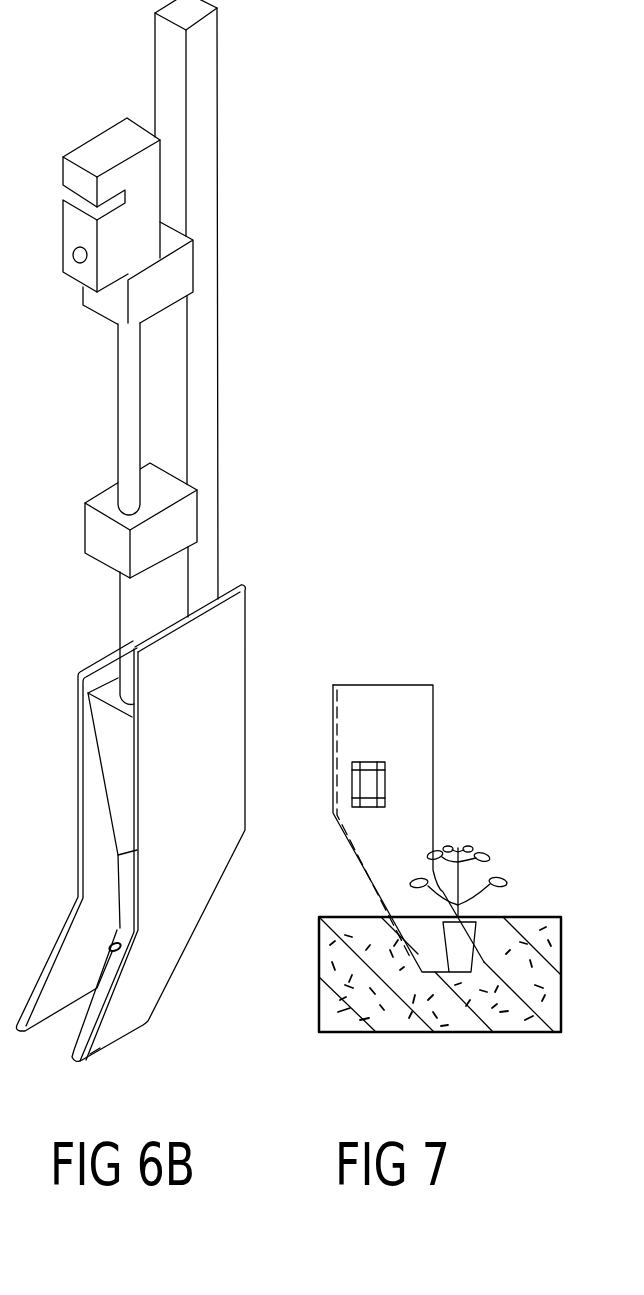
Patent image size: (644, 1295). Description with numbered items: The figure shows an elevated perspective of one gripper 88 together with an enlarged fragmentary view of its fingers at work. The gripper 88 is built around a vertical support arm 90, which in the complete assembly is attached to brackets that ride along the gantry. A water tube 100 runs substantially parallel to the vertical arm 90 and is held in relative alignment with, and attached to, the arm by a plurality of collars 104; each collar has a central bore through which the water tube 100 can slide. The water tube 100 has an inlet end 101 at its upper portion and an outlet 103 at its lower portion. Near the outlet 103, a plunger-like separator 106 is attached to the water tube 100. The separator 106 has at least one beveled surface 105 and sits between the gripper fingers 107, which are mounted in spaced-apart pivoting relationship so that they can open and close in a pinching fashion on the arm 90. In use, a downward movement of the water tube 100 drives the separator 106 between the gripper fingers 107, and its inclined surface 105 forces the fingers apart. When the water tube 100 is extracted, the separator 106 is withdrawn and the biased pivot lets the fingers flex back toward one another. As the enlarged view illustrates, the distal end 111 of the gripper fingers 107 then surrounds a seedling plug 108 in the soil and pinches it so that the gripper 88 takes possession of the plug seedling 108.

In FIG. 6B, the gripper 88 is at (212, 264).
In FIG. 6B, the vertical support arm 90 is at (212, 497).
In FIG. 6B, the water tube 100 is at (125, 400).
In FIG. 6B, the inlet end 101 is at (75, 257).
In FIG. 6B, the outlet 103 is at (121, 949).
In FIG. 6B, the collar 104 is at (188, 253).
In FIG. 6B, the beveled surface 105 is at (117, 800).
In FIG. 6B, the plunger like separator 106 is at (107, 724).
In FIG. 6B, the gripper fingers 107 is at (229, 637).
In FIG. 7, the seedling plug 108 is at (490, 882).
In FIG. 6B, the distal end 111 is at (100, 1043).
In FIG. 7, the distal end 111 is at (422, 953).